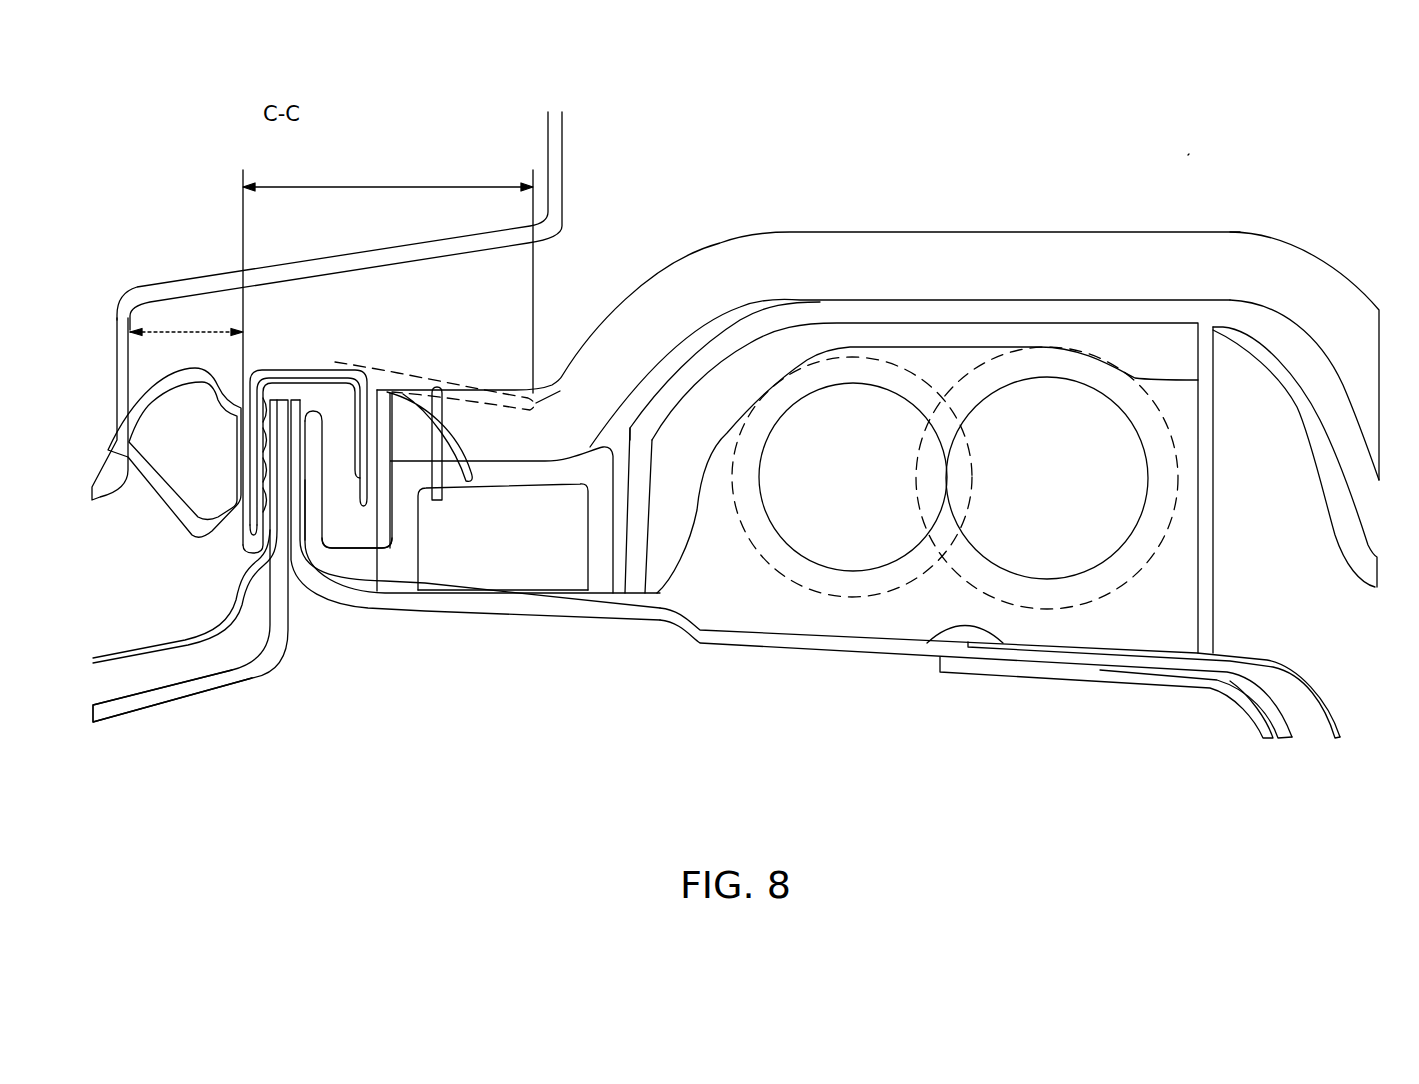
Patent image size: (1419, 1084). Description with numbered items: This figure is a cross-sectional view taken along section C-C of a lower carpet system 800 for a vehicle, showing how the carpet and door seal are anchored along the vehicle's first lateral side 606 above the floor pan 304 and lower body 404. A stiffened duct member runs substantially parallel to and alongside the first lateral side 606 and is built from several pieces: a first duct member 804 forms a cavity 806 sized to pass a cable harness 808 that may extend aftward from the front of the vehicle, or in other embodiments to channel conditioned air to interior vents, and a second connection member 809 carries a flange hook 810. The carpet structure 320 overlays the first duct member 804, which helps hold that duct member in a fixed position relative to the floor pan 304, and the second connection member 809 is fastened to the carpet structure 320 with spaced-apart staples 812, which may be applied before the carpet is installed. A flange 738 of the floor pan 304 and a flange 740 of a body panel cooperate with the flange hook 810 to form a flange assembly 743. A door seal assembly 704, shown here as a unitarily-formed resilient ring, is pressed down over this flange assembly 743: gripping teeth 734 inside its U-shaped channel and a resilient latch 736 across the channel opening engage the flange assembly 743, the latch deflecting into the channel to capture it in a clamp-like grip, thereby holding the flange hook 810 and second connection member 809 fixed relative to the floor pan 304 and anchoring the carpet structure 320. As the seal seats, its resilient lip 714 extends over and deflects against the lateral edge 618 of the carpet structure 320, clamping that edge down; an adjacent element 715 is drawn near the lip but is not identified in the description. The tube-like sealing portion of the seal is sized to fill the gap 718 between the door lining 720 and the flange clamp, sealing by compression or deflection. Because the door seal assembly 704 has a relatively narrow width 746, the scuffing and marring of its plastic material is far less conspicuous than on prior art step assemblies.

The lower carpet system 800 is at (1190, 152).
The floor pan 304 is at (857, 653).
The carpet structure 320 is at (1293, 265).
The lower body 404 is at (1140, 680).
The first lateral side 606 is at (305, 612).
The lateral edge of carpet structure 618 is at (285, 450).
The door seal assembly 704 is at (389, 394).
The resilient lip 714 is at (425, 366).
The tongue tip 715 is at (537, 402).
The gap 718 is at (185, 332).
The door lining 720 is at (458, 252).
The gripping teeth 734 is at (264, 477).
The resilient latch 736 is at (340, 483).
The flange of floor pan 738 is at (318, 402).
The flange of body panel 740 is at (279, 405).
The flange assembly 743 is at (300, 407).
The width of door seal assembly 746 is at (412, 187).
The first duct member 804 is at (983, 313).
The cavity 806 is at (958, 610).
The cable harness 808 is at (995, 418).
The second connection member 809 is at (497, 478).
The flange hook 810 is at (315, 445).
The staples 812 is at (447, 495).